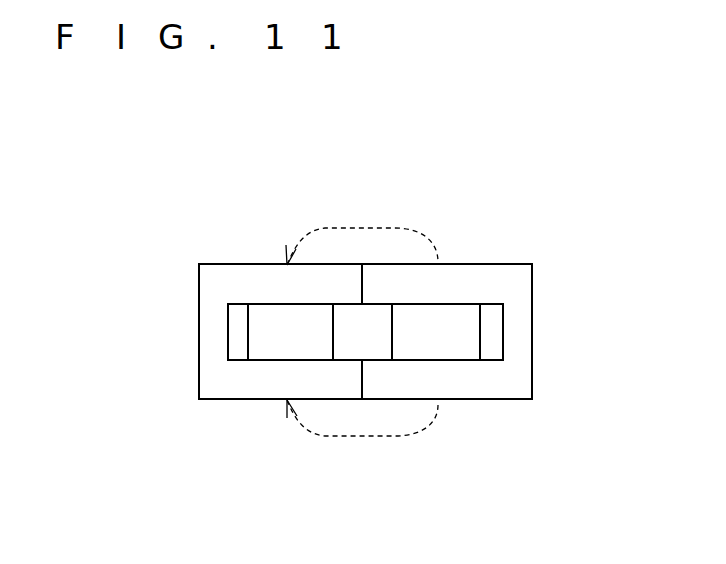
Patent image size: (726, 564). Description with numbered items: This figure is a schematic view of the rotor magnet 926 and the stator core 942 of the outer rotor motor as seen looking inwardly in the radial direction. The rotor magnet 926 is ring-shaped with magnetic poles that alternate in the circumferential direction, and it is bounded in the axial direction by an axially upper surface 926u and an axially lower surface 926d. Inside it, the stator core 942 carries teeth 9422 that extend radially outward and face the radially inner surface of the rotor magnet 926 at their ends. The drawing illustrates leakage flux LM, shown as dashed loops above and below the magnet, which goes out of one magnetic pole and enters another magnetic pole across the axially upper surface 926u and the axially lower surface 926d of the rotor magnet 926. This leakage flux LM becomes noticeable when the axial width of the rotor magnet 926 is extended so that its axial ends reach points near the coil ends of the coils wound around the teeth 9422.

The rotor magnet 926 is at (215, 373).
The axially upper surface 926u is at (223, 265).
The axially lower surface 926d is at (233, 400).
The stator core 942 is at (355, 334).
The teeth 9422 is at (237, 329).
The leakage flux LM is at (428, 240).